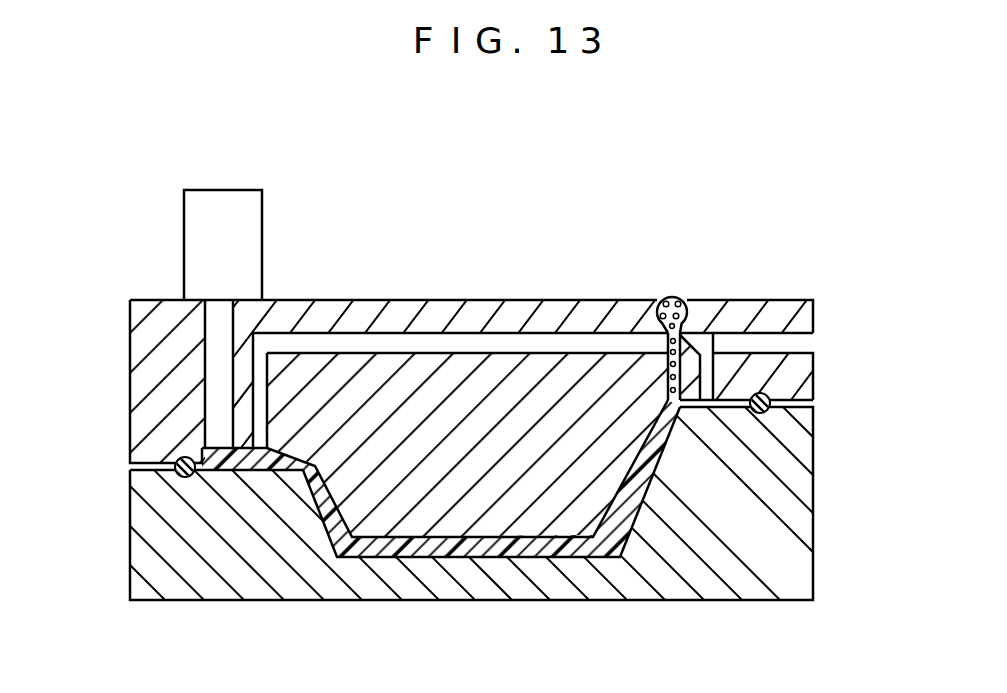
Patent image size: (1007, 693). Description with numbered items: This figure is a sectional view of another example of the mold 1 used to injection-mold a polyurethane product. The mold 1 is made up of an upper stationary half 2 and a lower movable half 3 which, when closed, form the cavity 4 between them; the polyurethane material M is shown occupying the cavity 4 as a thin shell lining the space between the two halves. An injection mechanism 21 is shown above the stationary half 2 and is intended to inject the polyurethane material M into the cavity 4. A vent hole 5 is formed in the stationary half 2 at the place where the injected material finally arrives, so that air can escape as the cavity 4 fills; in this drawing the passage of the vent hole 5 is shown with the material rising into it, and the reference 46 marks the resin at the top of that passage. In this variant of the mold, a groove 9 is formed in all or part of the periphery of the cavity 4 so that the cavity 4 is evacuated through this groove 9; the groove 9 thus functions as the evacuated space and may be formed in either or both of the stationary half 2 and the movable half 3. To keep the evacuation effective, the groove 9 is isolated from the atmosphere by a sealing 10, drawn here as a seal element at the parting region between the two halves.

The mold 1 is at (50, 366).
The upper stationary half 2 is at (130, 384).
The lower movable half 3 is at (132, 510).
The cavity 4 is at (428, 548).
The vent hole 5 is at (668, 348).
The groove 9 is at (280, 372).
The sealing 10 is at (772, 412).
The injection mechanism 21 is at (282, 207).
The sprue resin 46 is at (676, 297).
The polyurethane material M is at (543, 551).